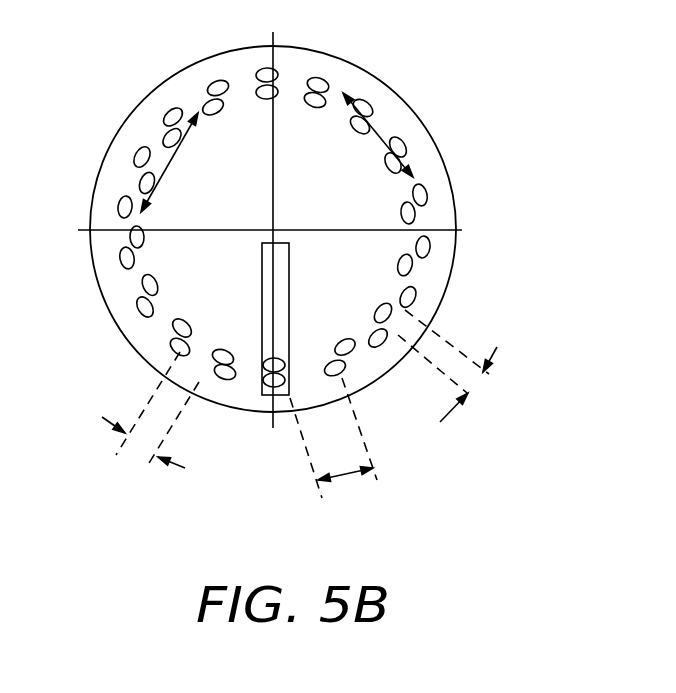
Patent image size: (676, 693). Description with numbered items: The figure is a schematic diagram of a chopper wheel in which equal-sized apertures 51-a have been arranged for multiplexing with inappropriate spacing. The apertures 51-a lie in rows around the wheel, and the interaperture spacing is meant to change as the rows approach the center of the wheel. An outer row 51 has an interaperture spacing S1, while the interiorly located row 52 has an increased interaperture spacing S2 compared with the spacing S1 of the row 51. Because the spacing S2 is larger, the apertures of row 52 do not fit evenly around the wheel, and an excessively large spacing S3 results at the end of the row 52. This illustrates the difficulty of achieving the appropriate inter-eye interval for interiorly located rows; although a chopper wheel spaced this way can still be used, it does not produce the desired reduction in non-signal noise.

The row 51 is at (383, 122).
The apertures 51-a is at (218, 88).
The row 52 is at (164, 163).
The spacing S1 is at (472, 387).
The interaperture spacing S2 is at (142, 442).
The spacing S3 is at (352, 477).